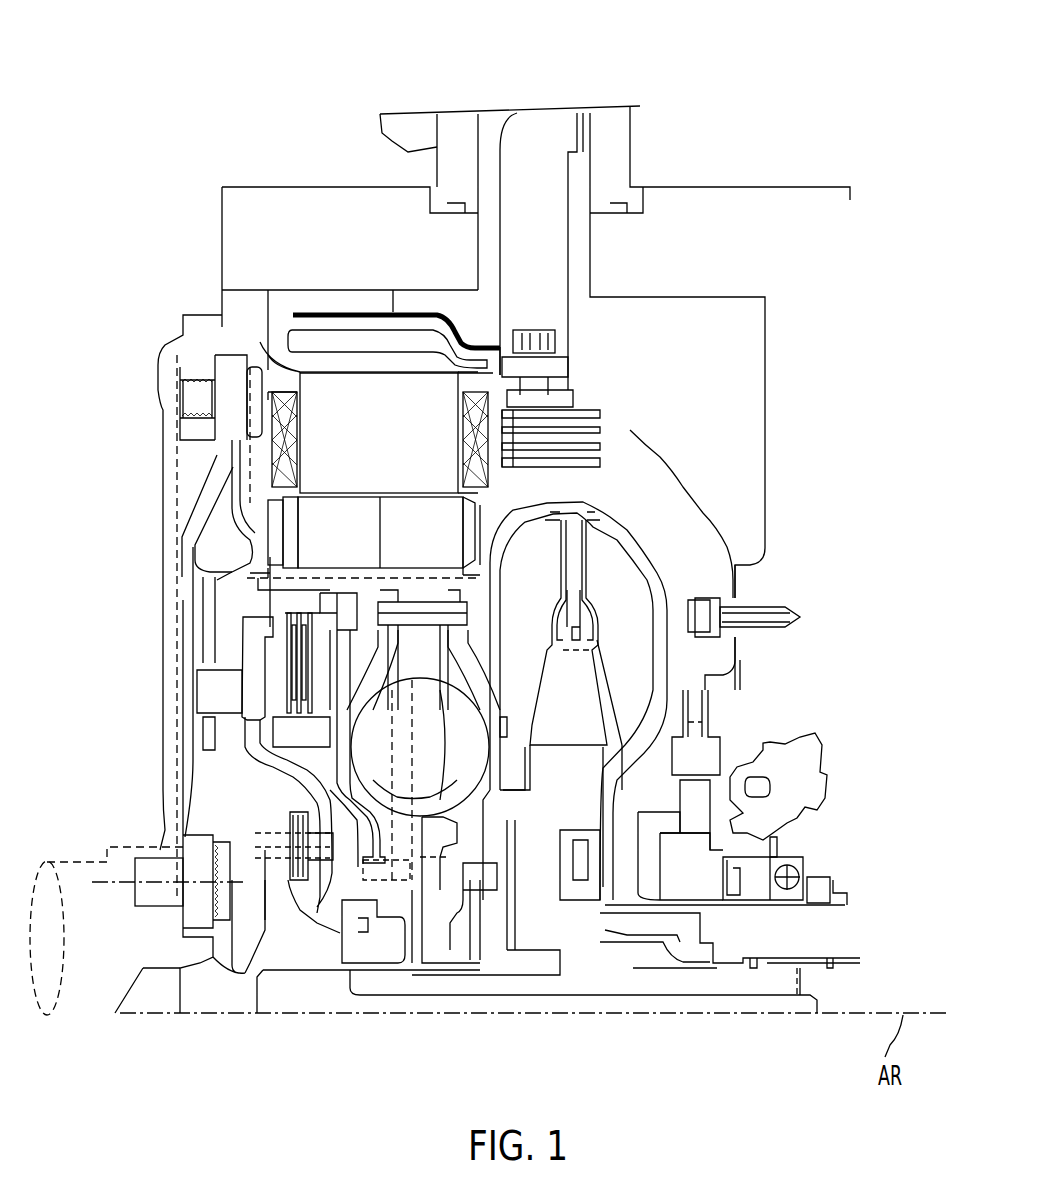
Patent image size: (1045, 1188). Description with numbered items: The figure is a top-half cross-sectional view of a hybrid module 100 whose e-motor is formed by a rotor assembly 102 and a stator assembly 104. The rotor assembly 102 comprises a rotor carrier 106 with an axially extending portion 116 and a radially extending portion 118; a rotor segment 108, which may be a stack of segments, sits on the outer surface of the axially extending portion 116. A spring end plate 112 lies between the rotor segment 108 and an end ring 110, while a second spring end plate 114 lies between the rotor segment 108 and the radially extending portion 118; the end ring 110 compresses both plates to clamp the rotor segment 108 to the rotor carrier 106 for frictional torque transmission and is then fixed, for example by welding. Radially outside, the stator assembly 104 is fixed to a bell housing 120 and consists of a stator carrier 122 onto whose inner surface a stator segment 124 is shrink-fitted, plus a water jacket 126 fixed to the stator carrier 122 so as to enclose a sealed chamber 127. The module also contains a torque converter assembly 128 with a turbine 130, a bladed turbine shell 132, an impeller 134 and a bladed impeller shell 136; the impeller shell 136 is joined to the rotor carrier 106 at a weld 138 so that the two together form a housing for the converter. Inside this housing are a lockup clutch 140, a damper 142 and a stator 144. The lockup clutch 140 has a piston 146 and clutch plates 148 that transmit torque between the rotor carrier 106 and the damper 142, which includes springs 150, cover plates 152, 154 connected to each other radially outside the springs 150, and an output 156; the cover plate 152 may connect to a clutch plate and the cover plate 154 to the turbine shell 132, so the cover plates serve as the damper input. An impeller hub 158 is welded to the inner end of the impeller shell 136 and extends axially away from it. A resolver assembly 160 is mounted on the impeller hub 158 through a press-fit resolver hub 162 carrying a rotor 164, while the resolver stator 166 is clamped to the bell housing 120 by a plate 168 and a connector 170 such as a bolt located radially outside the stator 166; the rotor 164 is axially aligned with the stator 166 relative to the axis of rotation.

The hybrid module 100 is at (172, 81).
The rotor assembly 102 is at (200, 576).
The stator assembly 104 is at (482, 305).
The rotor carrier 106 is at (333, 583).
The rotor segment 108 is at (403, 432).
The end ring 110 is at (280, 530).
The spring end plate 112 is at (258, 455).
The spring end plate 114 is at (417, 522).
The axially extending portion 116 is at (272, 572).
The radially extending portion 118 is at (500, 595).
The bell housing 120 is at (803, 347).
The stator carrier 122 is at (270, 350).
The stator segment 124 is at (507, 390).
The water jacket 126 is at (383, 315).
The sealed chamber 127 is at (332, 335).
The torque converter assembly 128 is at (575, 622).
The turbine 130 is at (362, 738).
The turbine shell 132 is at (507, 827).
The impeller 134 is at (700, 627).
The impeller shell 136 is at (658, 655).
The weld 138 is at (490, 552).
The lockup clutch 140 is at (240, 688).
The damper 142 is at (330, 737).
The stator 144 is at (561, 712).
The piston 146 is at (492, 630).
The clutch plates 148 is at (247, 620).
The springs 150 is at (358, 792).
The cover plate 152 is at (370, 805).
The cover plate 154 is at (477, 827).
The output 156 is at (430, 950).
The impeller hub 158 is at (717, 905).
The resolver assembly 160 is at (768, 728).
The resolver hub 162 is at (662, 898).
The rotor 164 is at (693, 807).
The stator 166 is at (693, 750).
The plate 168 is at (657, 690).
The connector 170 is at (800, 617).